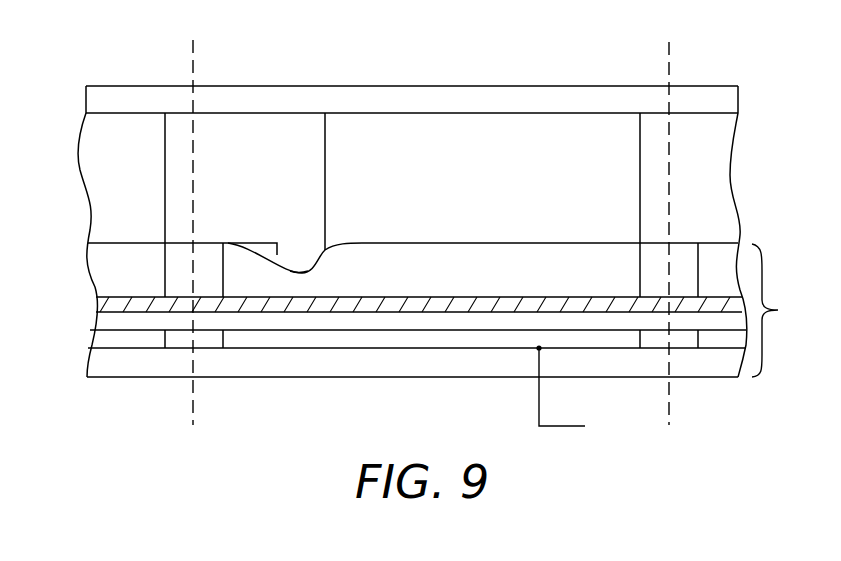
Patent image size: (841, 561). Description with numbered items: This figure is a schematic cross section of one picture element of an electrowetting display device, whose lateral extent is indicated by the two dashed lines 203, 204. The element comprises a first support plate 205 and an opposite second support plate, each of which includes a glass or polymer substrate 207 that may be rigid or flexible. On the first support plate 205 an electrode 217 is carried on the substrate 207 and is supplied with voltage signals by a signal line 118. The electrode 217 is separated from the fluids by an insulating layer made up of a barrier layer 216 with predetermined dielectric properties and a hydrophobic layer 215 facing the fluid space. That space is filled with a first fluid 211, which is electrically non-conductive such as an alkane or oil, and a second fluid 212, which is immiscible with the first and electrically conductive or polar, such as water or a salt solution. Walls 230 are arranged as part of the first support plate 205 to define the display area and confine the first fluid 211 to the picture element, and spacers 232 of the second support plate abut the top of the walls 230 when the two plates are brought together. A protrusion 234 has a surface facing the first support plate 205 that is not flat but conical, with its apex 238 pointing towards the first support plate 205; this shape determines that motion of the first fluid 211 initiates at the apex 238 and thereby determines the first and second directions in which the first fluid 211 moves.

The signal line 118 is at (560, 427).
The dashed line 203 is at (195, 52).
The dashed line 204 is at (667, 52).
The first support plate 205 is at (787, 310).
The substrate 207 is at (712, 100).
The first fluid 211 is at (452, 256).
The second fluid 212 is at (537, 143).
The hydrophobic layer 215 is at (458, 305).
The barrier layer 216 is at (361, 326).
The electrode 217 is at (267, 340).
The walls 230 is at (173, 270).
The spacers 232 is at (178, 123).
The protrusion 234 is at (297, 256).
The apex 238 is at (306, 274).